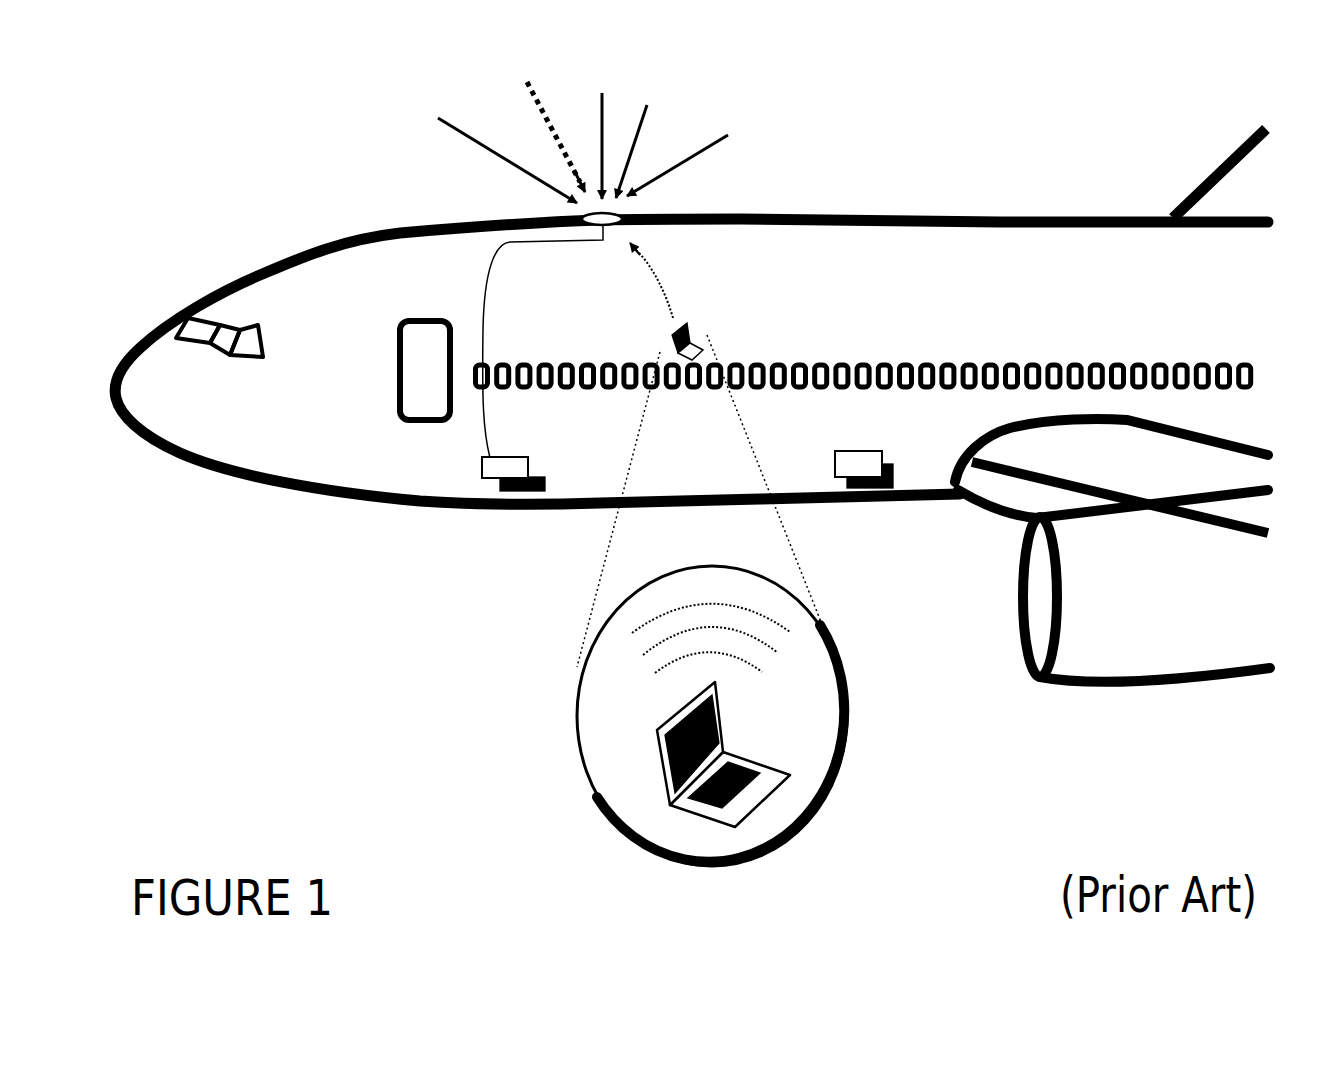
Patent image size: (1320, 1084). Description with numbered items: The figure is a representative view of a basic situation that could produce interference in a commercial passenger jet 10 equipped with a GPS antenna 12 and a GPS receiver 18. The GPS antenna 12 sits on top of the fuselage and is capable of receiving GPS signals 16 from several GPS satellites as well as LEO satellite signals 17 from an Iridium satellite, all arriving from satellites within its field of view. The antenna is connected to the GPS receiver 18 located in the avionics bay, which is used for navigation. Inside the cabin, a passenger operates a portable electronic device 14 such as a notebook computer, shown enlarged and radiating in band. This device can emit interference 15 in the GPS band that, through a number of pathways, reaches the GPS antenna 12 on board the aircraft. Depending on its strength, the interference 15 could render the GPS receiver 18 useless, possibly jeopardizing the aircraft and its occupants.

The commercial passenger jet 10 is at (1064, 160).
The GPS antenna 12 is at (590, 229).
The portable electronic device 14 is at (667, 340).
The interference 15 is at (667, 288).
The GPS signals 16 is at (493, 158).
The LEO satellite signals 17 is at (548, 127).
The GPS receiver 18 is at (482, 477).